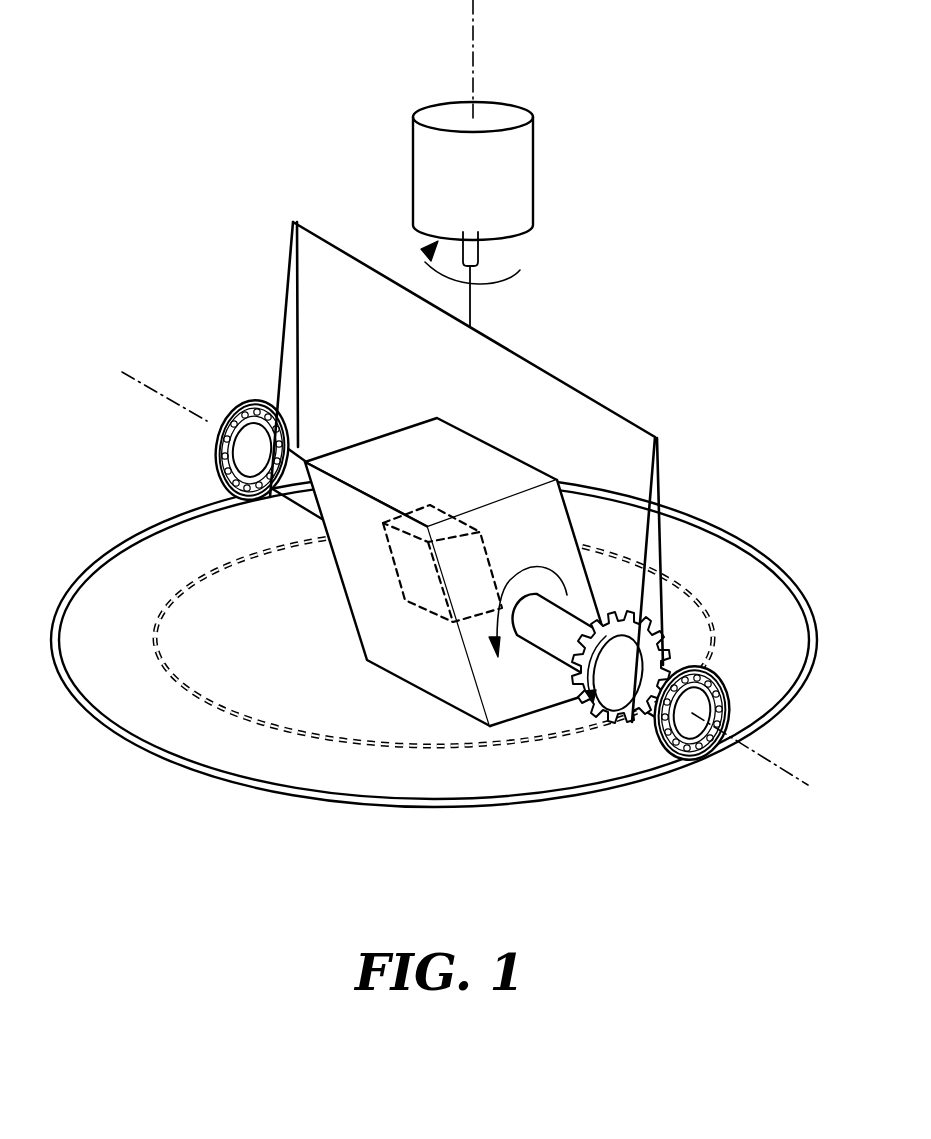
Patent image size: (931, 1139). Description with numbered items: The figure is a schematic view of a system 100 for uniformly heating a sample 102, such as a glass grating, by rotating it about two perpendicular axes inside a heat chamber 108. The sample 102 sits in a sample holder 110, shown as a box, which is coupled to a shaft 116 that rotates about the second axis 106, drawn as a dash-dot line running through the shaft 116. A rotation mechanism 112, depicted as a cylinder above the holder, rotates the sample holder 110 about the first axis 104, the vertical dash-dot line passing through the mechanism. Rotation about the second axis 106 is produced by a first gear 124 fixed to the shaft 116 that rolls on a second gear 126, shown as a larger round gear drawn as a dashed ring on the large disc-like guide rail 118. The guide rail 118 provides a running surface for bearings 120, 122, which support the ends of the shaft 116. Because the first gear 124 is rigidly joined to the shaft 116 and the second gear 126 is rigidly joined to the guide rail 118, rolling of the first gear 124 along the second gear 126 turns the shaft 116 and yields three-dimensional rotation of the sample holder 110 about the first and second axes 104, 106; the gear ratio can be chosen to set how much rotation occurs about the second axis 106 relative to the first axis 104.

The system 100 is at (640, 240).
The sample 102 is at (443, 507).
The first axis 104 is at (473, 42).
The second axis 106 is at (178, 405).
The heat chamber 108 is at (186, 239).
The sample holder 110 is at (387, 432).
The rotation mechanism 112 is at (433, 160).
The shaft 116 is at (558, 647).
The guide rail 118 is at (606, 778).
The bearing 120 is at (713, 681).
The bearing 122 is at (218, 462).
The first gear 124 is at (645, 622).
The second gear 126 is at (545, 735).